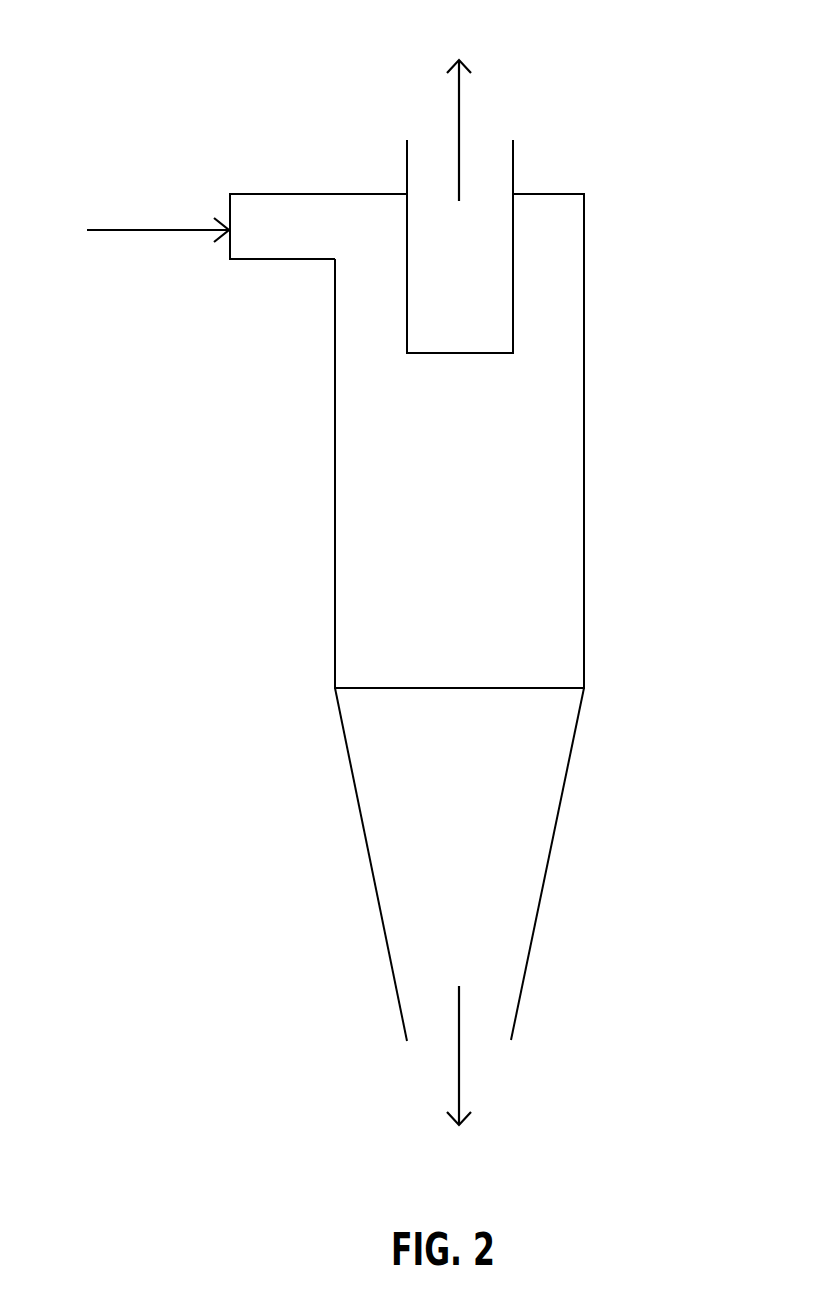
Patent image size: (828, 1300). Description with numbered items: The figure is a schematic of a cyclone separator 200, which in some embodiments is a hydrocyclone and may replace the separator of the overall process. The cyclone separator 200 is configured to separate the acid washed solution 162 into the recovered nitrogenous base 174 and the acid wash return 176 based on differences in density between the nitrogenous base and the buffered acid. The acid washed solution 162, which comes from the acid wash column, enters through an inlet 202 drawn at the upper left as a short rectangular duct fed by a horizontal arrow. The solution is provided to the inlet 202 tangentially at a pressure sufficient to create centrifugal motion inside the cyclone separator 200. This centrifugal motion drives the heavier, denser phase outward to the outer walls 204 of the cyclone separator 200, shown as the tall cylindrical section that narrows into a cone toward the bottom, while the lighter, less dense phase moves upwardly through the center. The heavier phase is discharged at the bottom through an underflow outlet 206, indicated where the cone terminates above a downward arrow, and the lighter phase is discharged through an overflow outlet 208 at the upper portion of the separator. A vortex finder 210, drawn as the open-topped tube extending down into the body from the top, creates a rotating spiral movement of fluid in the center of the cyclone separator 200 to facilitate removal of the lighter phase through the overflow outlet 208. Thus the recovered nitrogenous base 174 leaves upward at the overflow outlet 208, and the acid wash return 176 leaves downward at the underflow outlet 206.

The cyclone separator 200 is at (118, 47).
The inlet 202 is at (296, 192).
The outer walls 204 is at (584, 400).
The underflow outlet 206 is at (430, 1046).
The overflow outlet 208 is at (501, 120).
The vortex finder 210 is at (513, 283).
The acid washed solution 162 is at (164, 232).
The recovered nitrogenous base 174 is at (457, 117).
The acid wash return 176 is at (460, 1082).